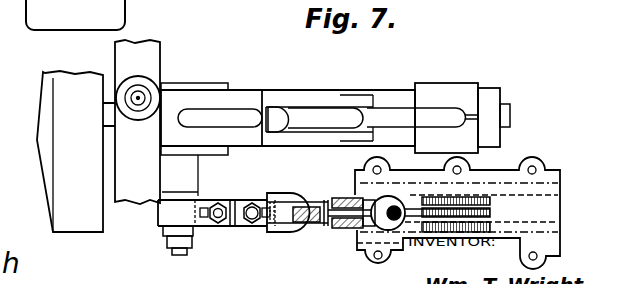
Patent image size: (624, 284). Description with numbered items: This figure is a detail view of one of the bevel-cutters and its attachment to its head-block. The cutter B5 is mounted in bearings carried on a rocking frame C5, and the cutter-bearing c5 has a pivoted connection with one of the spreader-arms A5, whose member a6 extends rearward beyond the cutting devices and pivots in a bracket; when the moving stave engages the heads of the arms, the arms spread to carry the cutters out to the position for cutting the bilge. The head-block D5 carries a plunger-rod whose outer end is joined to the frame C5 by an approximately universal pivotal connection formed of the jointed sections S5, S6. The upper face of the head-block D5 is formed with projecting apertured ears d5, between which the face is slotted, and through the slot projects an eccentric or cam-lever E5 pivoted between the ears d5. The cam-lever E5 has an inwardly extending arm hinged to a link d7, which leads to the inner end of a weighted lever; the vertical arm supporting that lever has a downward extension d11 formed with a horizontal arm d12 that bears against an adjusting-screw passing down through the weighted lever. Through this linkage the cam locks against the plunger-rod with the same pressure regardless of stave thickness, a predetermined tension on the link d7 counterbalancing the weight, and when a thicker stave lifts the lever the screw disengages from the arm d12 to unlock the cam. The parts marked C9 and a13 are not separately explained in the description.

The spreader-arm A5 is at (131, 122).
The cutter B5 is at (70, 151).
The cutter-bearing c5 is at (194, 77).
The rocking frame C5 is at (247, 91).
The piston C9 is at (284, 110).
The spreader-arm member a6 is at (216, 215).
The jointed section S5 is at (213, 228).
The jointed section S6 is at (257, 230).
The cam-lever E5 is at (327, 200).
The link d7 is at (318, 223).
The downward extension d11 is at (347, 180).
The horizontal arm d12 is at (378, 214).
The pivot head a13 is at (393, 200).
The head-block D5 is at (500, 180).
The apertured ear d5 is at (414, 262).